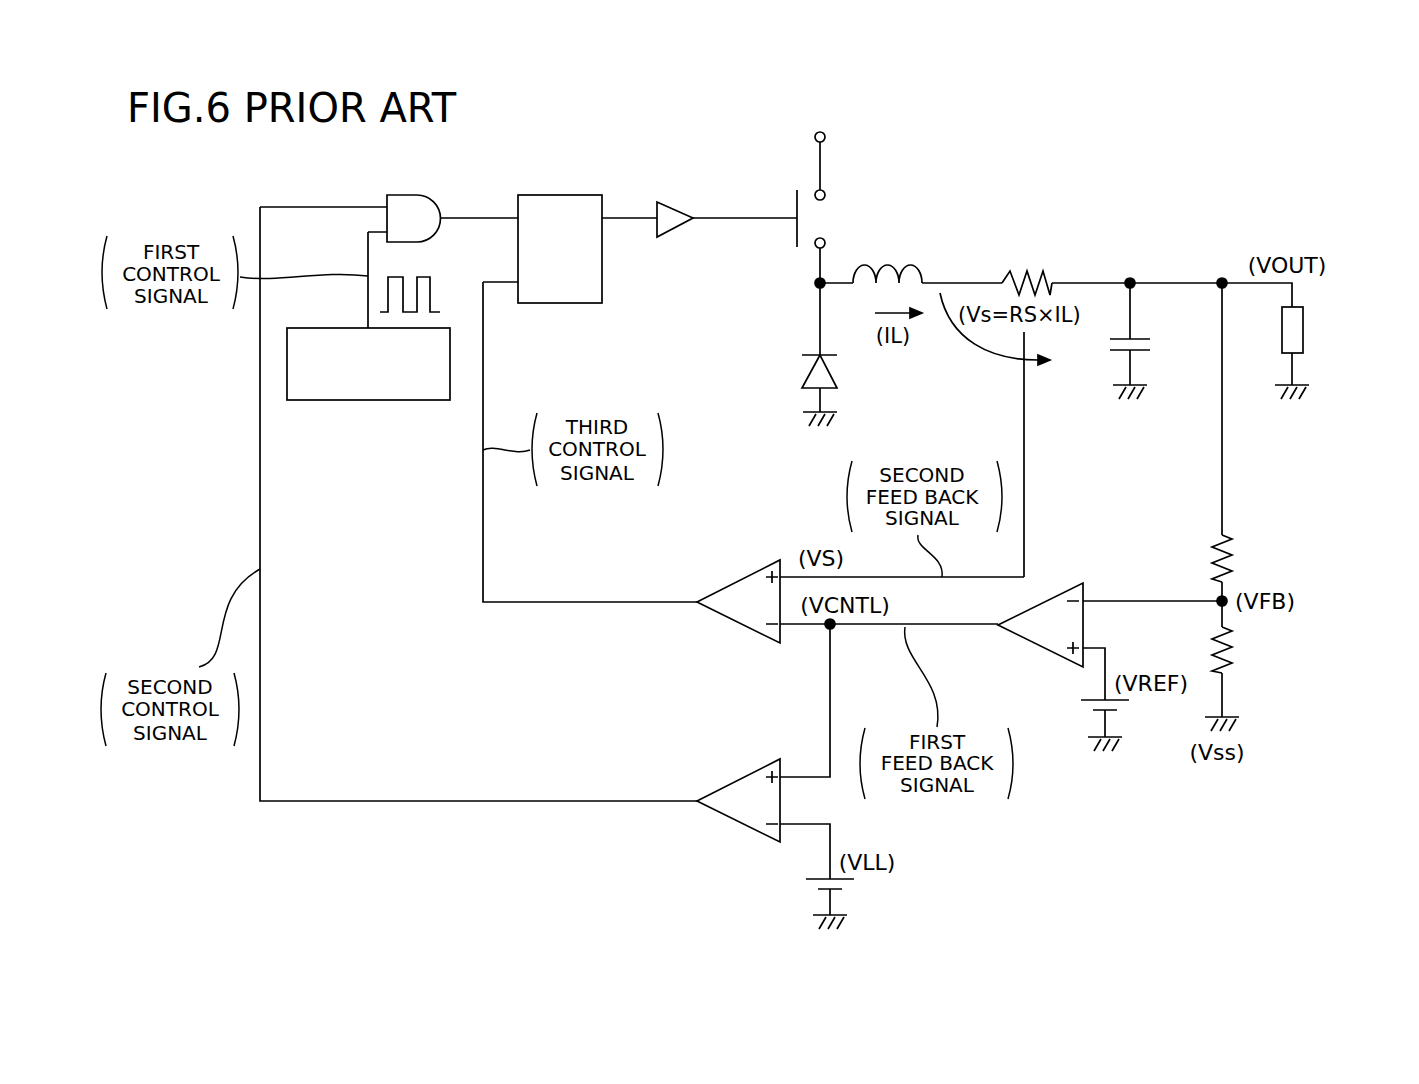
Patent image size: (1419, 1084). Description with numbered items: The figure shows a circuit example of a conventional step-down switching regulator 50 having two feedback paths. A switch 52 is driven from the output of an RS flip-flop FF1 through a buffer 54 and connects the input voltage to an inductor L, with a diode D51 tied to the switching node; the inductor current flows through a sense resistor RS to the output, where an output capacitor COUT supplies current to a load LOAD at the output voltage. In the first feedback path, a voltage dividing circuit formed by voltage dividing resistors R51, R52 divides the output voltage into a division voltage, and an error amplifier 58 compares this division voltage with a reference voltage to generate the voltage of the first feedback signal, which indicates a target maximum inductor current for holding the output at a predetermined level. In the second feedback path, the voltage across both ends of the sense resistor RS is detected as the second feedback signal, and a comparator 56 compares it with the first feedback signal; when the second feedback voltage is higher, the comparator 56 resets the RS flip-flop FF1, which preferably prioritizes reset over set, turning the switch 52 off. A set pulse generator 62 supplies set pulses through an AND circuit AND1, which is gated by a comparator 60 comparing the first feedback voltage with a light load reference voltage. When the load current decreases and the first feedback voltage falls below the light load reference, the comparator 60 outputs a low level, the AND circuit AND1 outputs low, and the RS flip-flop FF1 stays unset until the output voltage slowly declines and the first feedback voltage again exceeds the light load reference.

The switching regulator (prior art) 50 is at (1058, 198).
The switch 52 is at (797, 205).
The driver buffer 54 is at (672, 237).
The comparator 56 is at (738, 630).
The error amplifier 58 is at (1043, 648).
The comparator 60 is at (738, 828).
The set pulse generator 62 is at (362, 400).
The AND circuit AND1 is at (408, 202).
The RS flip-flop FF1 is at (560, 235).
The inductor L is at (887, 259).
The sense resistor RS is at (1027, 266).
The diode D51 is at (837, 372).
The output capacitor COUT is at (1156, 353).
The load LOAD is at (1303, 325).
The voltage dividing resistor R51 is at (1248, 558).
The voltage dividing resistor R52 is at (1248, 650).